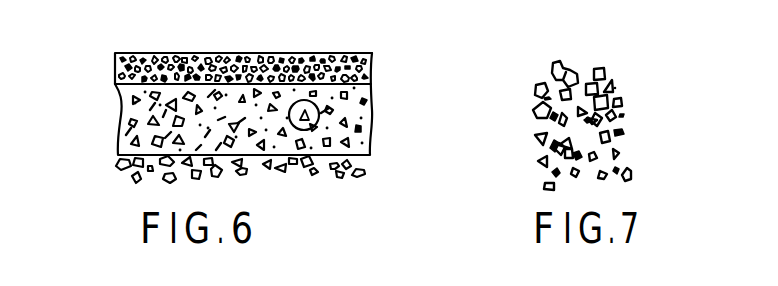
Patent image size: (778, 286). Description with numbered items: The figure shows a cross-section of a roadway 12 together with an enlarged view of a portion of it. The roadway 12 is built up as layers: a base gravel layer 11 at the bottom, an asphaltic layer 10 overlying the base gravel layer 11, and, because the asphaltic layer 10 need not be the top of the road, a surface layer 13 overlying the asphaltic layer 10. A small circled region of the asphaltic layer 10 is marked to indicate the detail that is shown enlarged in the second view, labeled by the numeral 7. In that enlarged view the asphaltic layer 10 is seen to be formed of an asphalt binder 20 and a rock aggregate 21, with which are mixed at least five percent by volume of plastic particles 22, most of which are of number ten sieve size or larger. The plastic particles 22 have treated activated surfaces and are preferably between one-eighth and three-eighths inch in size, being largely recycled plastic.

In FIG. 6, the detail area shown in FIG. 7 is at (318, 112).
In FIG. 6, the asphaltic layer 10 is at (112, 90).
In FIG. 6, the base gravel layer 11 is at (124, 176).
In FIG. 6, the roadway 12 is at (387, 173).
In FIG. 6, the surface layer 13 is at (115, 66).
In FIG. 7, the asphalt binder 20 is at (620, 135).
In FIG. 7, the rock aggregate 21 is at (559, 59).
In FIG. 7, the plastic particles 22 is at (615, 66).